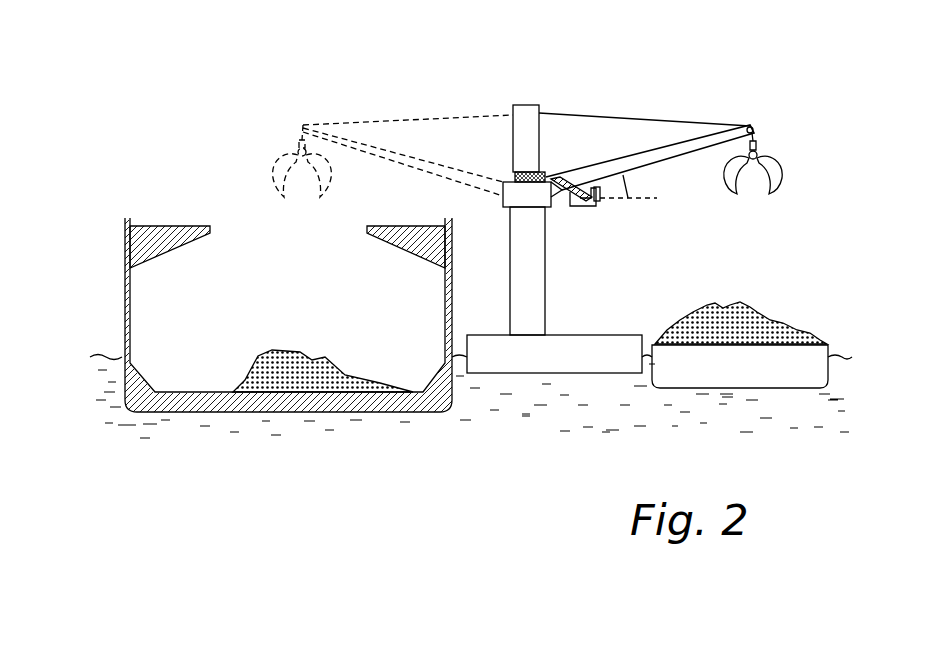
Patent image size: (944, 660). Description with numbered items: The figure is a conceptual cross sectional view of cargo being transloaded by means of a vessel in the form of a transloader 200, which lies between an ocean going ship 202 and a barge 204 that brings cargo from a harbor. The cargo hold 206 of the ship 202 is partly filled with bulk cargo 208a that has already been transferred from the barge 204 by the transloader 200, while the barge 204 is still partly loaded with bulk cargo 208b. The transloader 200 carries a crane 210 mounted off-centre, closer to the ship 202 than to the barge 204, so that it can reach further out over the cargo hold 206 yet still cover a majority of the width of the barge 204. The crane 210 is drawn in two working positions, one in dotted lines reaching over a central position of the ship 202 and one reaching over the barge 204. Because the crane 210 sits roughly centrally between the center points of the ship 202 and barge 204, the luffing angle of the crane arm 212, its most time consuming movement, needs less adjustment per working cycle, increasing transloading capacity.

The transloader 200 is at (583, 285).
The ocean going ship 202 is at (102, 213).
The barge 204 is at (838, 320).
The cargo hold 206 is at (238, 258).
The bulk cargo 208a is at (330, 360).
The bulk cargo 208b is at (803, 272).
The crane 210 is at (688, 87).
The crane arm 212 is at (664, 162).